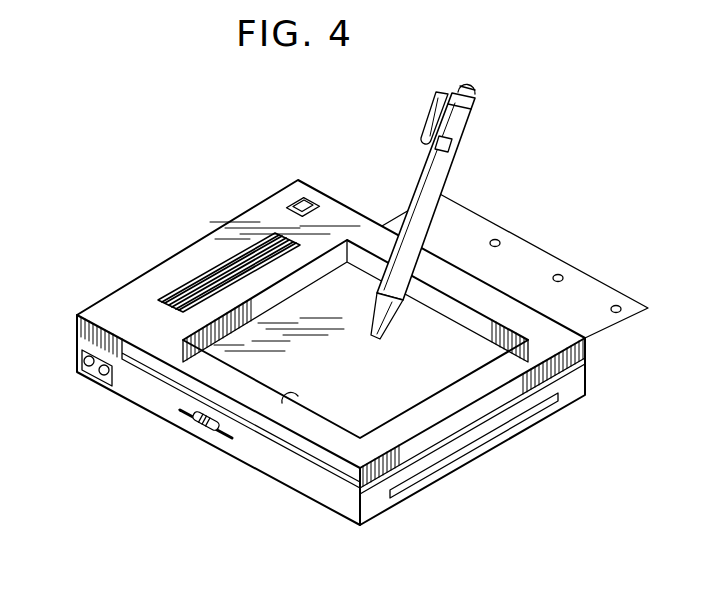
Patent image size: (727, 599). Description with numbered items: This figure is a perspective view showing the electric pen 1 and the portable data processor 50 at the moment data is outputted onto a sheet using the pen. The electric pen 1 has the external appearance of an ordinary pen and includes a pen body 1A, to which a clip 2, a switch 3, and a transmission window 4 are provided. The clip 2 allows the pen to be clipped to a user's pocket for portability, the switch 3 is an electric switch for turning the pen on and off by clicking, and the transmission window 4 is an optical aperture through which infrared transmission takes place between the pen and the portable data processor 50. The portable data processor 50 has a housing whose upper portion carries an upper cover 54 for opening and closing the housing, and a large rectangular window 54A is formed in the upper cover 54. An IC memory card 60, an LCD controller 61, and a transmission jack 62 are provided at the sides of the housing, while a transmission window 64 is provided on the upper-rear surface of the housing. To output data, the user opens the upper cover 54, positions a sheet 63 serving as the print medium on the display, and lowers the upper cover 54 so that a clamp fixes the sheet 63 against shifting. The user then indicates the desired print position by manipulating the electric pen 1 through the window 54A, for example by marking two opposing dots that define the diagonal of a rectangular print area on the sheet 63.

The electric pen 1 is at (451, 204).
The pen body 1A is at (420, 188).
The clip 2 is at (426, 138).
The switch 3 is at (478, 78).
The transmission window 4 is at (479, 122).
The portable data processor 50 is at (351, 353).
The upper cover 54 is at (372, 455).
The window 54A is at (292, 401).
The IC memory card 60 is at (546, 402).
The LCD controller 61 is at (208, 430).
The transmission jack 62 is at (95, 372).
The sheet 63 is at (585, 290).
The transmission window 64 is at (291, 196).